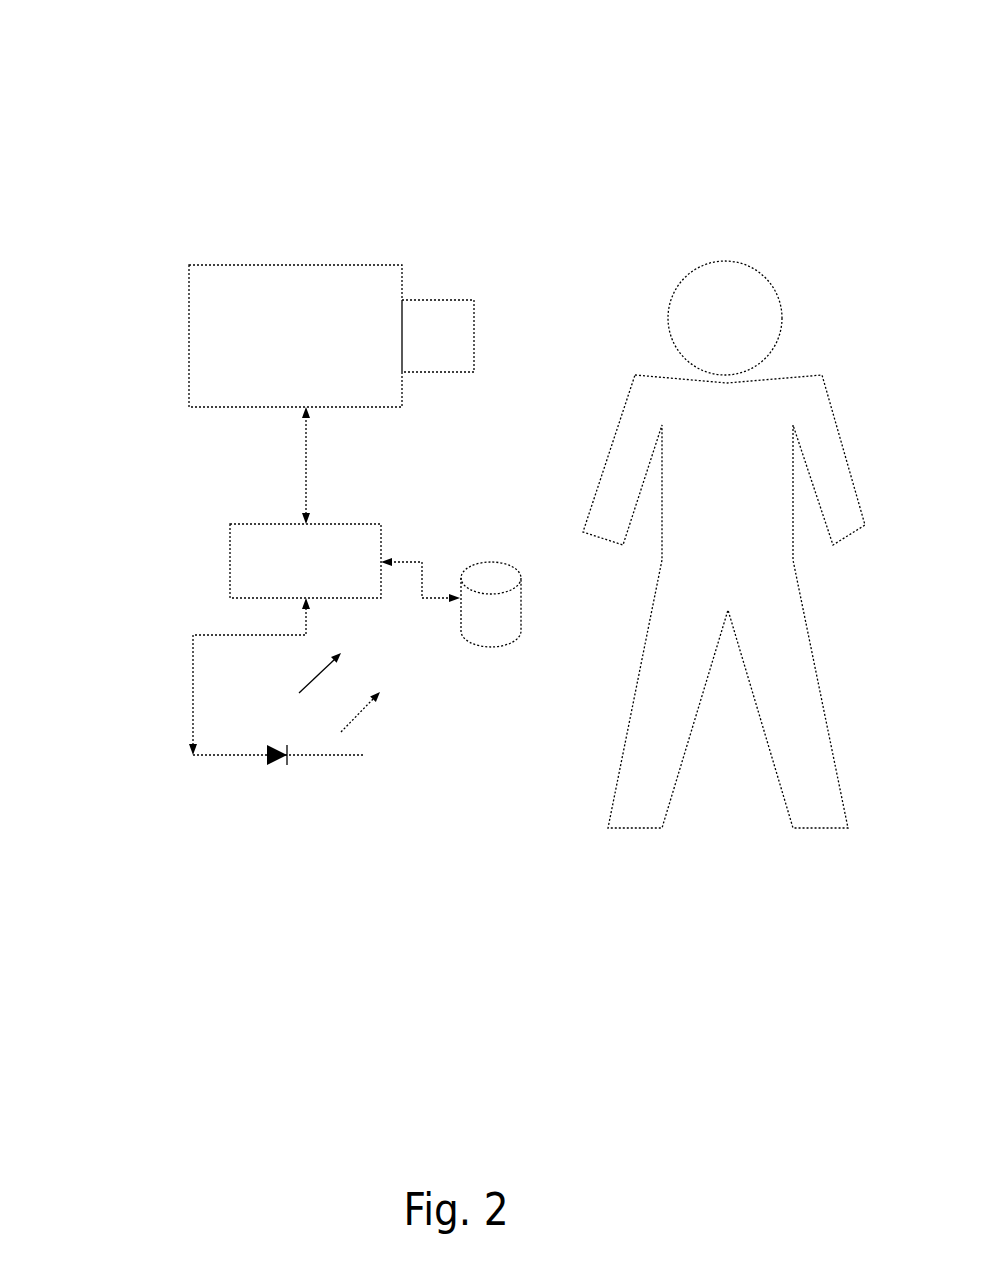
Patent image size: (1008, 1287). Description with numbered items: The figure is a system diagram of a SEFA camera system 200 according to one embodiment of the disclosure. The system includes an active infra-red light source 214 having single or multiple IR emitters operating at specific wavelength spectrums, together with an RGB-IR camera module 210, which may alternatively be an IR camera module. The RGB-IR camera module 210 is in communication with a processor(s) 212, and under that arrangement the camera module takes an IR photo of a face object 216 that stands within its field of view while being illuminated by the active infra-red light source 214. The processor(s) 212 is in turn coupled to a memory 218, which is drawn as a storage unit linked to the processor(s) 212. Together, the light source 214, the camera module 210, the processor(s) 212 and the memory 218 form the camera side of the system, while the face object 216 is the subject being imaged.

The system 200 is at (281, 107).
The RGB-IR camera module 210 is at (190, 282).
The processor(s) 212 is at (230, 562).
The active infra-red light source 214 is at (193, 755).
The face object 216 is at (713, 255).
The memory 218 is at (488, 538).